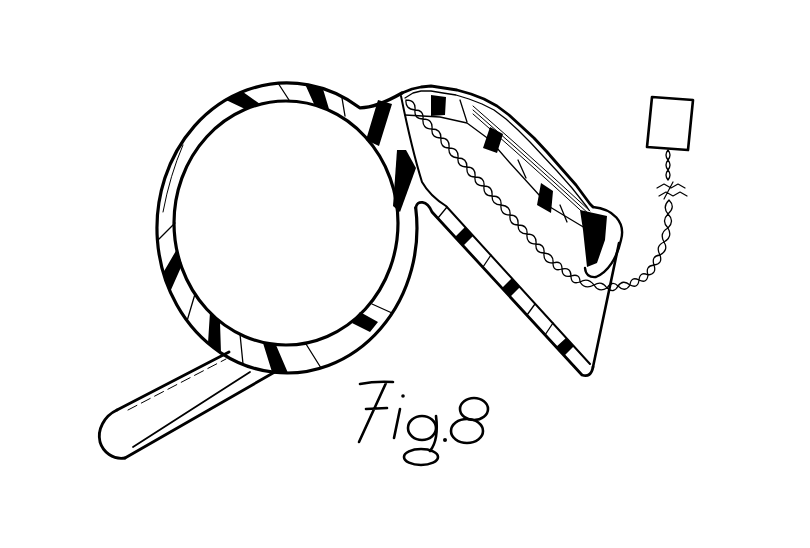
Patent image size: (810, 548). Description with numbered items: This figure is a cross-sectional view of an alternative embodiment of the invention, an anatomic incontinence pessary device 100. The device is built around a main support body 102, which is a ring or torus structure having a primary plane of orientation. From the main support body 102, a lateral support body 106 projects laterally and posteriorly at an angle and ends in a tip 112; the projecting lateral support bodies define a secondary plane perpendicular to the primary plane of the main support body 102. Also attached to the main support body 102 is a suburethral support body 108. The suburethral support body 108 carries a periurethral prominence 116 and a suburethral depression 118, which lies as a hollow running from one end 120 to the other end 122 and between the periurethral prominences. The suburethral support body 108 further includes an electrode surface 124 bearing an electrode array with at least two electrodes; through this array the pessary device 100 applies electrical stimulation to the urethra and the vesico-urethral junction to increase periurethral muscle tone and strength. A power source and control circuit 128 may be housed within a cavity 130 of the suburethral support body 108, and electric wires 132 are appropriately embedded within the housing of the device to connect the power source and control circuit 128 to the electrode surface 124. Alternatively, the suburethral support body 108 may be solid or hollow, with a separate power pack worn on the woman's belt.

The anatomic incontinence pessary device 100 is at (145, 76).
The main support body 102 is at (160, 291).
The lateral support body 106 is at (172, 432).
The suburethral support body 108 is at (537, 228).
The tip 112 is at (101, 452).
The periurethral prominence 116 is at (527, 135).
The suburethral depression 118 is at (550, 166).
The end 120 is at (436, 80).
The end 122 is at (610, 333).
The electrode surface 124 is at (490, 103).
The power source and control circuit 128 is at (693, 127).
The cavity 130 is at (546, 288).
The electric wires 132 is at (657, 270).